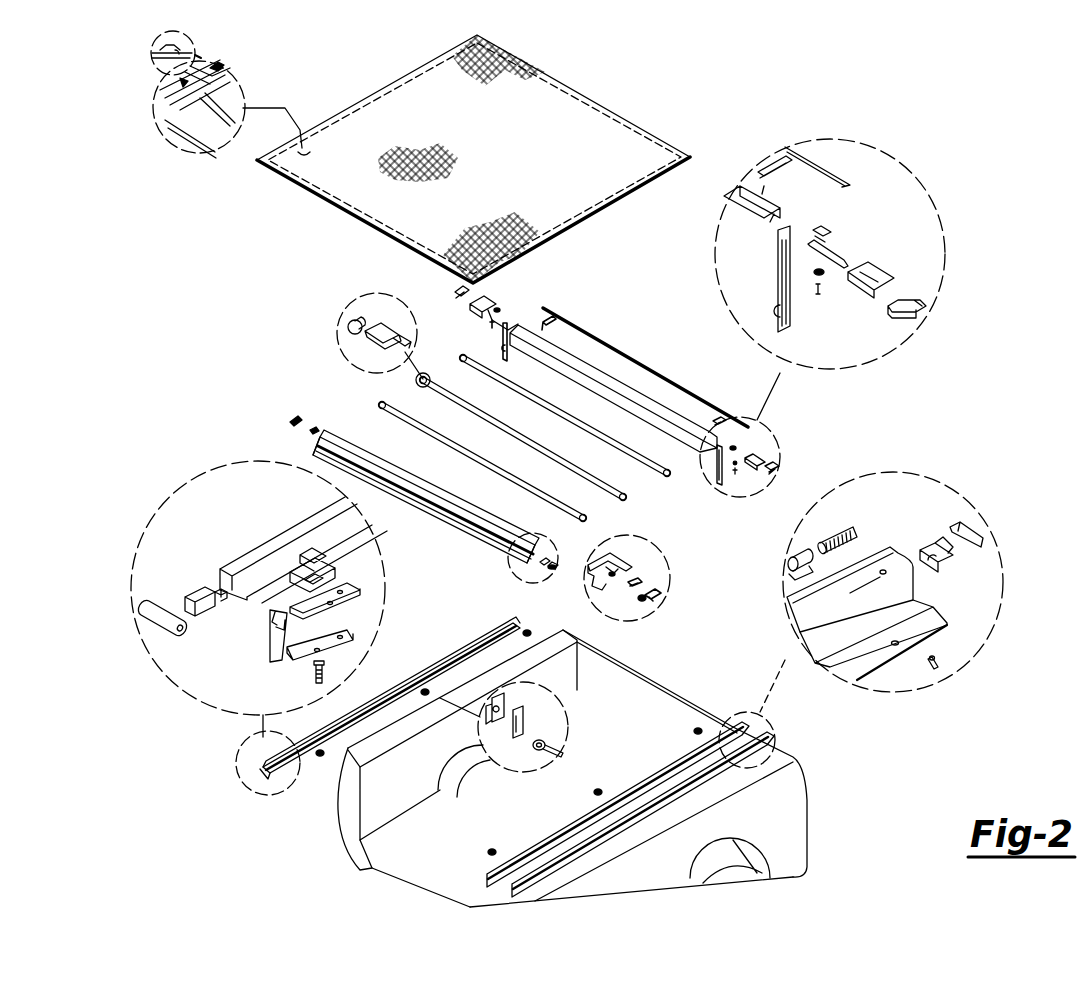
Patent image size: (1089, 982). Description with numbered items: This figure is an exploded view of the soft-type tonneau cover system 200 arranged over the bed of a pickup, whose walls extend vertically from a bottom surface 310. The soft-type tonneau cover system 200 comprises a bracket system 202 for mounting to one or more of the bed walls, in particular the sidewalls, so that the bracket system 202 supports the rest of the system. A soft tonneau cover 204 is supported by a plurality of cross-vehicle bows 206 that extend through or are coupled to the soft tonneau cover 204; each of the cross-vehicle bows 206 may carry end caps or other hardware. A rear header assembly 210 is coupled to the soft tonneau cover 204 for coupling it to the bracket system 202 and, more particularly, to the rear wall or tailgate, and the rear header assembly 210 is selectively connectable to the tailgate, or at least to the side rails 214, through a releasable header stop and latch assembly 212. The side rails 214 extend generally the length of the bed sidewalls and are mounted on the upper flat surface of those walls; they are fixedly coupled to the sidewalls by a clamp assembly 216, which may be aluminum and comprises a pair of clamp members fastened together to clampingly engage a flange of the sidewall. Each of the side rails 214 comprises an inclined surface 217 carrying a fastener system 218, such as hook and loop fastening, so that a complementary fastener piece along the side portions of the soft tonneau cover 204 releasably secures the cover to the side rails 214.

The soft-type tonneau cover system 200 is at (927, 133).
The bracket system 202 is at (270, 352).
The soft tonneau cover 204 is at (540, 176).
The cross-vehicle bows 206 is at (375, 411).
The rear header assembly 210 is at (486, 541).
The releasable header stop and latch assembly 212 is at (170, 572).
The side rails 214 is at (298, 770).
The clamp assembly 216 is at (567, 690).
The inclined surface 217 is at (887, 560).
The fastener system 218 is at (575, 229).
The bottom surface 310 is at (508, 836).